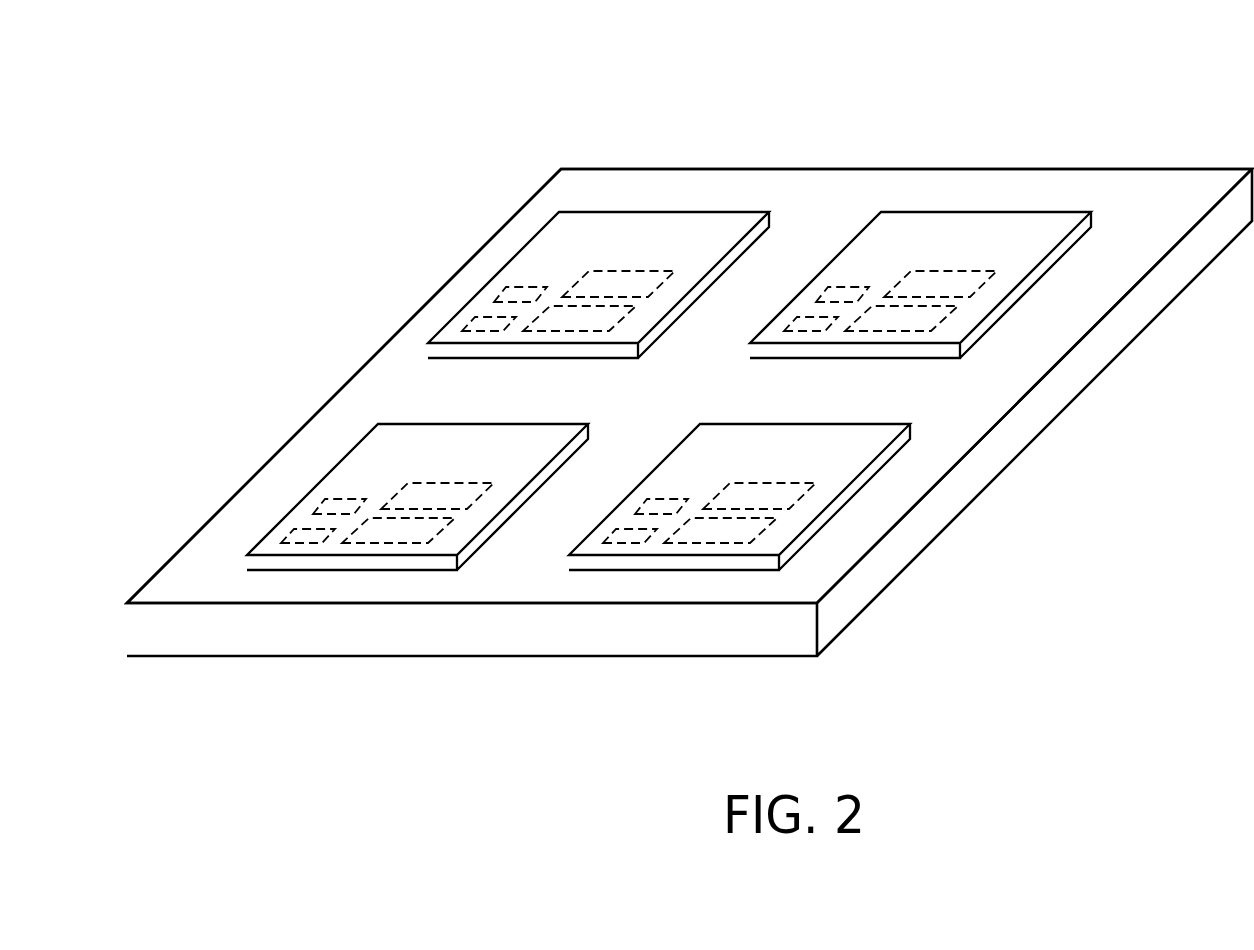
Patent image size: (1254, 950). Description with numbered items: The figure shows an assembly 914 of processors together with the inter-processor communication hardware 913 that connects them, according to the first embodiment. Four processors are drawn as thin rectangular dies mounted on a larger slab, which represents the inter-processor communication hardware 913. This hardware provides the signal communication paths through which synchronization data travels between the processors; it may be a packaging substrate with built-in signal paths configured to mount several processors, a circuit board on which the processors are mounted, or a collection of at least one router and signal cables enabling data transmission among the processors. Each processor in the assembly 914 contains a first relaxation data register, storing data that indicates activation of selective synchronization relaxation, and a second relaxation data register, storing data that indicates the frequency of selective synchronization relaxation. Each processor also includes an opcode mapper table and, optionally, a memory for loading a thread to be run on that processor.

The inter-processor communication hardware 913 is at (653, 408).
The assembly of processors 914 is at (577, 58).